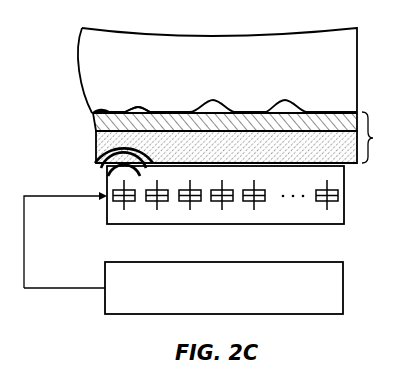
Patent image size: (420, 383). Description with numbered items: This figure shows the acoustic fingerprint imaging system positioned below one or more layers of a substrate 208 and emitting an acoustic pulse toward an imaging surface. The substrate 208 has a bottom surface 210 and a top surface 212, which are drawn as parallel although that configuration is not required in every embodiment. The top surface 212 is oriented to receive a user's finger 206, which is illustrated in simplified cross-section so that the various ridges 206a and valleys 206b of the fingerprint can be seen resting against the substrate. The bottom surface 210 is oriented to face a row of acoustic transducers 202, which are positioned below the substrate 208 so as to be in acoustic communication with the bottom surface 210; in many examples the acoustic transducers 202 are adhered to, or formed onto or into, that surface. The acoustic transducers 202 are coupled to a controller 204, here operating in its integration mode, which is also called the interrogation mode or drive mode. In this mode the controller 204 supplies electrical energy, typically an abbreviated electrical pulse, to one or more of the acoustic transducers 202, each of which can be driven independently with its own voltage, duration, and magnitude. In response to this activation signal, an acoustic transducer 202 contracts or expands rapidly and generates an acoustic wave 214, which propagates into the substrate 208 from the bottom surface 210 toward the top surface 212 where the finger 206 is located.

The acoustic transducers 202 is at (333, 203).
The controller 204 is at (105, 303).
The finger 206 is at (77, 47).
The ridges 206a is at (118, 112).
The valleys 206b is at (145, 105).
The substrate 208 is at (385, 137).
The bottom surface 210 is at (98, 171).
The top surface 212 is at (100, 115).
The acoustic wave 214 is at (111, 144).